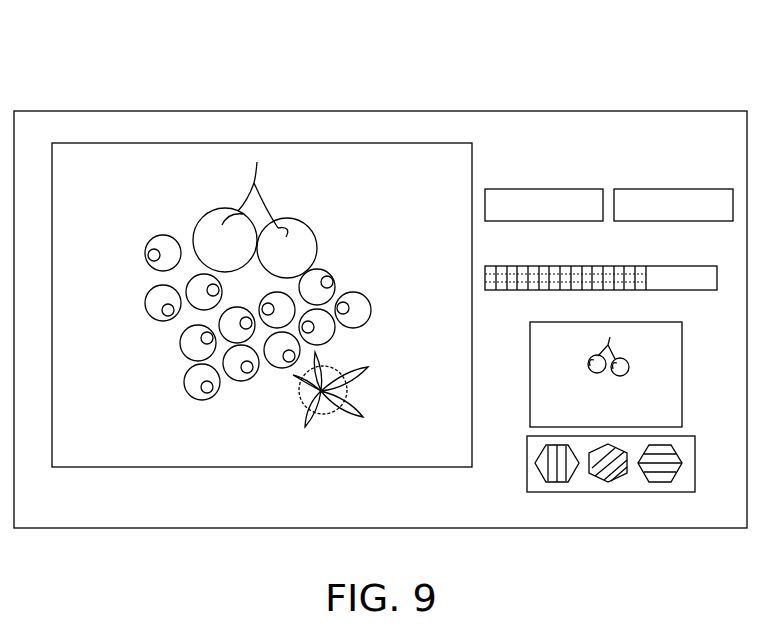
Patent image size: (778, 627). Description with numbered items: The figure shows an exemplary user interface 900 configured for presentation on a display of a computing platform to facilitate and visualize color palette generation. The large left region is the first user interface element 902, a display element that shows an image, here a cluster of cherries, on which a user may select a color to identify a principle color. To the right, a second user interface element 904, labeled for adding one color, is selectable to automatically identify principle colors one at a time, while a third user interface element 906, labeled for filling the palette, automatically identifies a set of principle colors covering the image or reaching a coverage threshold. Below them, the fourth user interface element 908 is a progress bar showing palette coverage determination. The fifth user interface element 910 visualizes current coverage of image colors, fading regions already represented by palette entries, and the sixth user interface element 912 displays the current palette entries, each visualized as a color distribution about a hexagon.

The user interface 900 is at (420, 60).
The first user interface element 902 is at (113, 142).
The second user interface element 904 is at (518, 188).
The third user interface element 906 is at (655, 188).
The fourth user interface element 908 is at (668, 266).
The fifth user interface element 910 is at (710, 352).
The sixth user interface element 912 is at (617, 492).